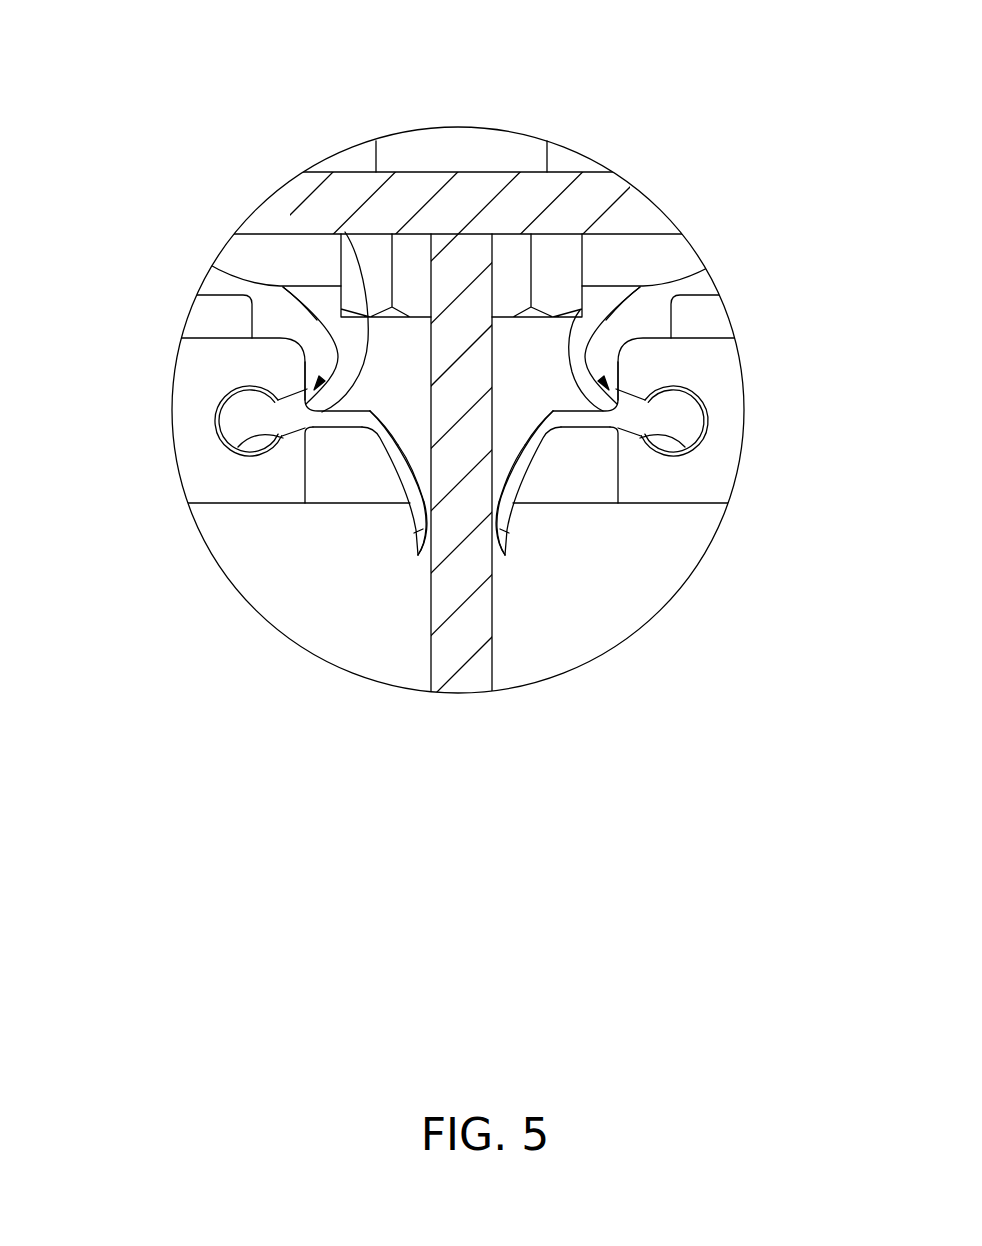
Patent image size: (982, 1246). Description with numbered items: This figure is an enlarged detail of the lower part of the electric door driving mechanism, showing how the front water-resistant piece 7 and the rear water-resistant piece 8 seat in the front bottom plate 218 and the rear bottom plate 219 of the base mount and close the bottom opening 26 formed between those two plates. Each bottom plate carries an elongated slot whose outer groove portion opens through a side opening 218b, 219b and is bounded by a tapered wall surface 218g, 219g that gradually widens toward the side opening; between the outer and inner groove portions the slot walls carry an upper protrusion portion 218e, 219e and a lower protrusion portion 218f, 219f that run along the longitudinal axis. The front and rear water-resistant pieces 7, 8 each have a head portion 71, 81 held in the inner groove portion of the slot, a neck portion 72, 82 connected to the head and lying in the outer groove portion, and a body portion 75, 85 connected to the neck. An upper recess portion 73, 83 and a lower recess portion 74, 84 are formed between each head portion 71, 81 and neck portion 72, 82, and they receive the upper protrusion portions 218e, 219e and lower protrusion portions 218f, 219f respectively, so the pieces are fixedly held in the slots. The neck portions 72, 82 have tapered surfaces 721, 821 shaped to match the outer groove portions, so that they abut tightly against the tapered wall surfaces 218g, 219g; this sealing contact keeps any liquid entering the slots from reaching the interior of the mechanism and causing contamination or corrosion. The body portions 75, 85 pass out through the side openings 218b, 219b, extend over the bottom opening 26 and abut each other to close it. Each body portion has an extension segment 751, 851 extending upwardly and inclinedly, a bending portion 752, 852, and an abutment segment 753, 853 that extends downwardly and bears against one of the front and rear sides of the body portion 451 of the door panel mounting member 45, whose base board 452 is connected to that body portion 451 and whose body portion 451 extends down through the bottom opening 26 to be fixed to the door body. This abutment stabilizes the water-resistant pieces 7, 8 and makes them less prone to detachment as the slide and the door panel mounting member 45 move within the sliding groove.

The door panel mounting member 45 is at (491, 361).
The body portion 451 is at (590, 196).
The base board 452 is at (527, 190).
The bottom opening 26 is at (402, 358).
The front bottom plate 218 is at (263, 296).
The side opening 218b is at (283, 287).
The upper protrusion portion 218e is at (305, 393).
The lower protrusion portion 218f is at (345, 232).
The tapered wall surface 218g is at (300, 300).
The rear bottom plate 219 is at (660, 299).
The side opening 219b is at (640, 287).
The upper protrusion portion 219e is at (618, 393).
The lower protrusion portion 219f is at (582, 288).
The tapered wall surface 219g is at (623, 300).
The front water-resistant piece 7 is at (246, 597).
The head portion 71 is at (243, 403).
The neck portion 72 is at (302, 437).
The tapered surface 721 is at (327, 413).
The upper recess portion 73 is at (232, 422).
The lower recess portion 74 is at (237, 449).
The body portion 75 is at (347, 602).
The extension segment 751 is at (330, 418).
The bending portion 752 is at (377, 423).
The abutment segment 753 is at (420, 533).
The rear water-resistant piece 8 is at (677, 597).
The head portion 81 is at (680, 403).
The neck portion 82 is at (621, 437).
The tapered surface 821 is at (596, 413).
The upper recess portion 83 is at (691, 422).
The lower recess portion 84 is at (686, 449).
The body portion 85 is at (575, 602).
The extension segment 851 is at (593, 418).
The bending portion 852 is at (546, 423).
The abutment segment 853 is at (503, 533).